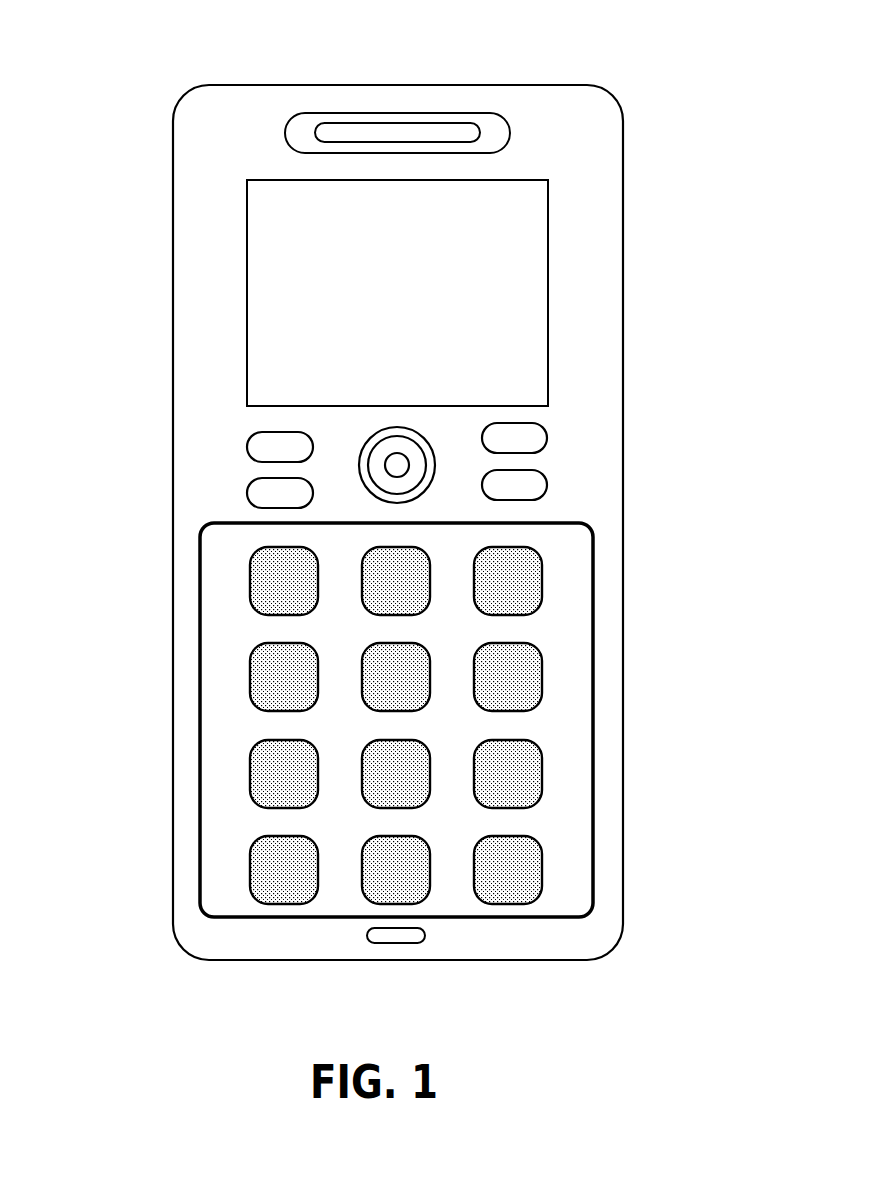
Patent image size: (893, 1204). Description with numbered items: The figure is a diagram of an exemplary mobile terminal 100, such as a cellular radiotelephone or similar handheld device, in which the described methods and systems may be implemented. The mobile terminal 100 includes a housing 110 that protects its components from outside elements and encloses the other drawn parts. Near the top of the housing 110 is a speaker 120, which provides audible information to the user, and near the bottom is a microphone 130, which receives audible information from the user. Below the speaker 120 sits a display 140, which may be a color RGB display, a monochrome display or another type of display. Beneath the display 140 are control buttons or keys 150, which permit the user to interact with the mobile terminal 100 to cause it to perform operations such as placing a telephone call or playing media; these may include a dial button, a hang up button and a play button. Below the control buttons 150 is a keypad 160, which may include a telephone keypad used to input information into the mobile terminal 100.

The mobile terminal 100 is at (106, 186).
The housing 110 is at (623, 185).
The speaker 120 is at (387, 128).
The microphone 130 is at (392, 940).
The display 140 is at (409, 292).
The control buttons 150 is at (643, 412).
The keypad 160 is at (200, 655).